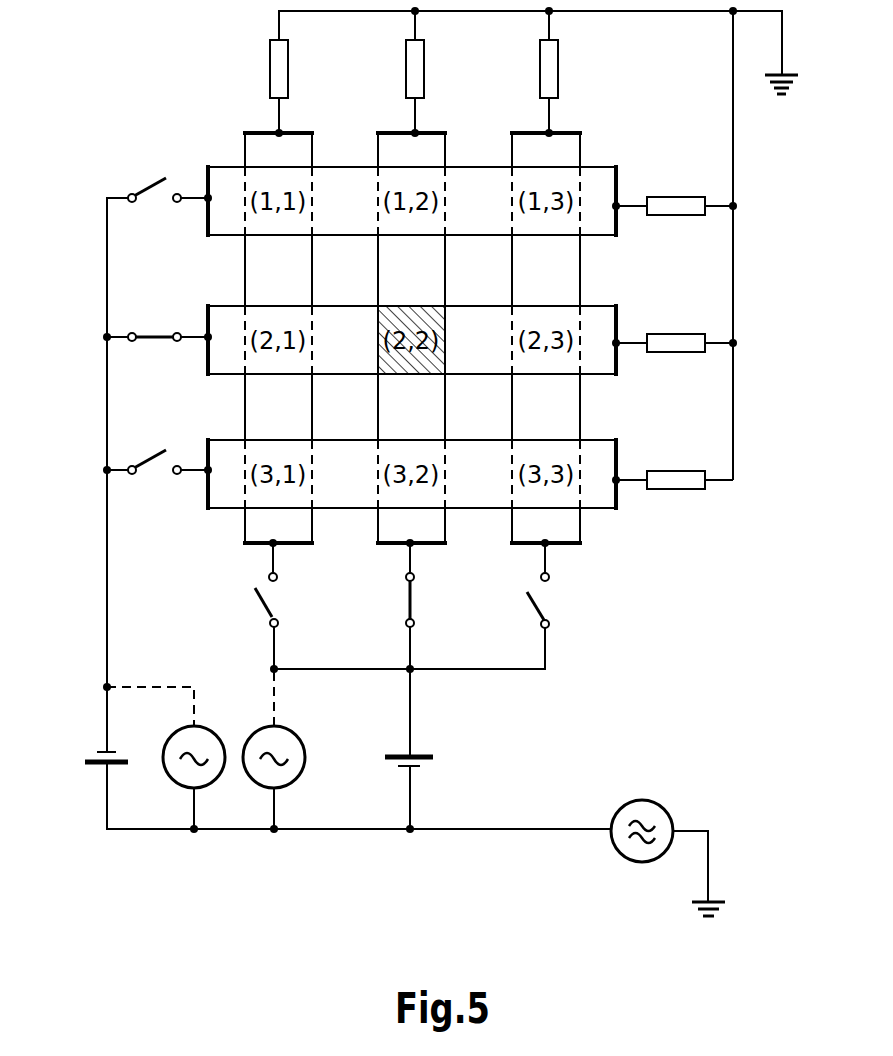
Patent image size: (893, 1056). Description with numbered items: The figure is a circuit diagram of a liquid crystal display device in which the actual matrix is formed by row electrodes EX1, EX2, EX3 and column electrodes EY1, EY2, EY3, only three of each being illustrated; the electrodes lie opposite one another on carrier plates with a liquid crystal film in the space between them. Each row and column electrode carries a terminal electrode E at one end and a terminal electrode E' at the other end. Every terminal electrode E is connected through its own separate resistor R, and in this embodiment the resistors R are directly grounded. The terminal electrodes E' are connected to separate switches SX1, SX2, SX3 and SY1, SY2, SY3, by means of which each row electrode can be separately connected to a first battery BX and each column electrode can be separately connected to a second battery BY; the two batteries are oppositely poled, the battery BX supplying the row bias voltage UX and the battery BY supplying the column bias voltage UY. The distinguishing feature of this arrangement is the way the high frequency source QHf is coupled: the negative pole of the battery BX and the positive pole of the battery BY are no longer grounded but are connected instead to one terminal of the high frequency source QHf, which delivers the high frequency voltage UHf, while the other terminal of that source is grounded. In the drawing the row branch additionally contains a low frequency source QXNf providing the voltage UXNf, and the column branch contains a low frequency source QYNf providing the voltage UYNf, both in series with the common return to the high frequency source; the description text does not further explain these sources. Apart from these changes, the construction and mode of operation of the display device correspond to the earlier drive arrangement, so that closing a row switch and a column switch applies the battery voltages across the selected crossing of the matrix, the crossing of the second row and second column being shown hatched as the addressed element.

The resistor R is at (503, 250).
The terminal electrode E is at (440, 280).
The terminal electrode E' is at (380, 372).
The row electrode EX1 is at (600, 232).
The row electrode EX2 is at (594, 366).
The row electrode EX3 is at (594, 503).
The column electrode EY1 is at (304, 149).
The column electrode EY2 is at (439, 149).
The column electrode EY3 is at (573, 149).
The switch SX1 is at (170, 212).
The switch SX2 is at (170, 358).
The switch SX3 is at (170, 485).
The switch SY1 is at (292, 604).
The switch SY2 is at (435, 604).
The switch SY3 is at (436, 604).
The first battery BX is at (92, 761).
The second battery BY is at (428, 749).
The row bias voltage UX is at (86, 718).
The column bias voltage UY is at (388, 718).
The row low-frequency source QXNf is at (212, 778).
The column low-frequency source QYNf is at (292, 778).
The row low-frequency voltage UXNf is at (227, 721).
The column low-frequency voltage UYNf is at (307, 721).
The high frequency source QHf is at (668, 839).
The high frequency source UHf is at (566, 815).